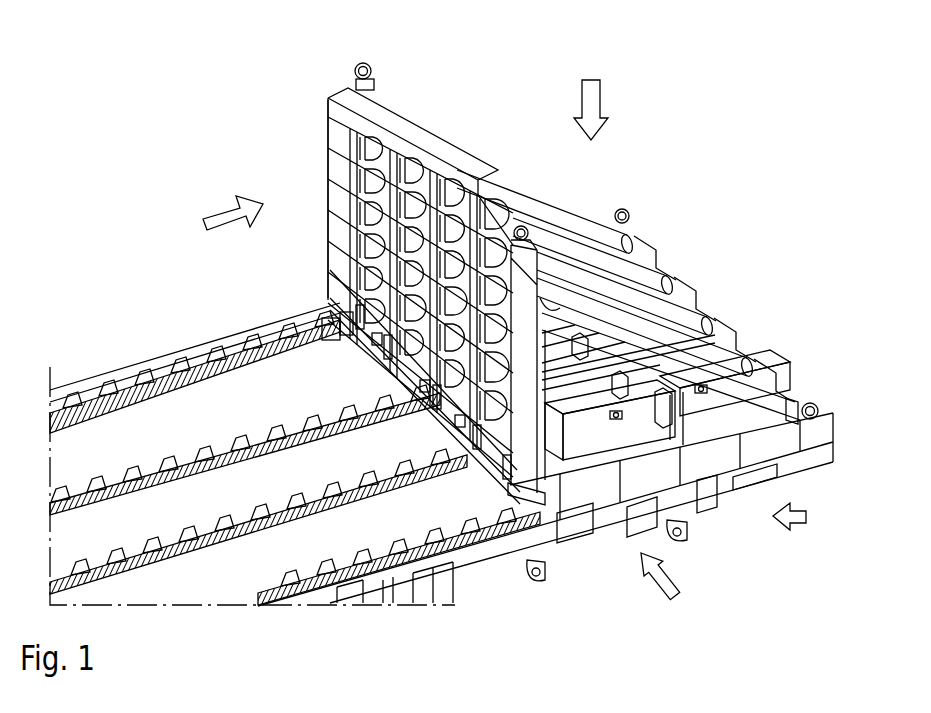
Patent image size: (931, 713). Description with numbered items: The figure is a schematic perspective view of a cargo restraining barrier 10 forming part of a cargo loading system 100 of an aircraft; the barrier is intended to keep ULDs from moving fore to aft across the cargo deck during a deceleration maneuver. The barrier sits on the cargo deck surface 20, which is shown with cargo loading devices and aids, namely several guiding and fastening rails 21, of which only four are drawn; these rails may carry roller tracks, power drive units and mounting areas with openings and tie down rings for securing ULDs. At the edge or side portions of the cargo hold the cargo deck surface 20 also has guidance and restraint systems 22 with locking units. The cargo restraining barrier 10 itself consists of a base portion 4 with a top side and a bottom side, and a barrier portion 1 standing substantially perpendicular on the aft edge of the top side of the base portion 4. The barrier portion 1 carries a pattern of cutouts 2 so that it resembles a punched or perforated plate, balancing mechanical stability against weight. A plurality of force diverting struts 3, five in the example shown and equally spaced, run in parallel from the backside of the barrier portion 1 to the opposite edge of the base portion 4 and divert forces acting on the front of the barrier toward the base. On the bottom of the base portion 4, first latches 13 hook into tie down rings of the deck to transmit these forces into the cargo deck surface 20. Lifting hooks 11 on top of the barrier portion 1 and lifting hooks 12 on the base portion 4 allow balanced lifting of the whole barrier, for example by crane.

The cargo loading system 100 is at (138, 152).
The barrier portion 1 is at (385, 105).
The cutouts 2 is at (328, 134).
The force diverting struts 3 is at (630, 243).
The base portion 4 is at (663, 430).
The cargo restraining barrier 10 is at (490, 117).
The lifting hooks 11 is at (364, 60).
The lifting hooks 12 is at (625, 207).
The first latches 13 is at (375, 366).
The cargo deck surface 20 is at (135, 326).
The guiding and fastening rails 21 is at (262, 440).
The guidance and restraint systems 22 is at (268, 328).